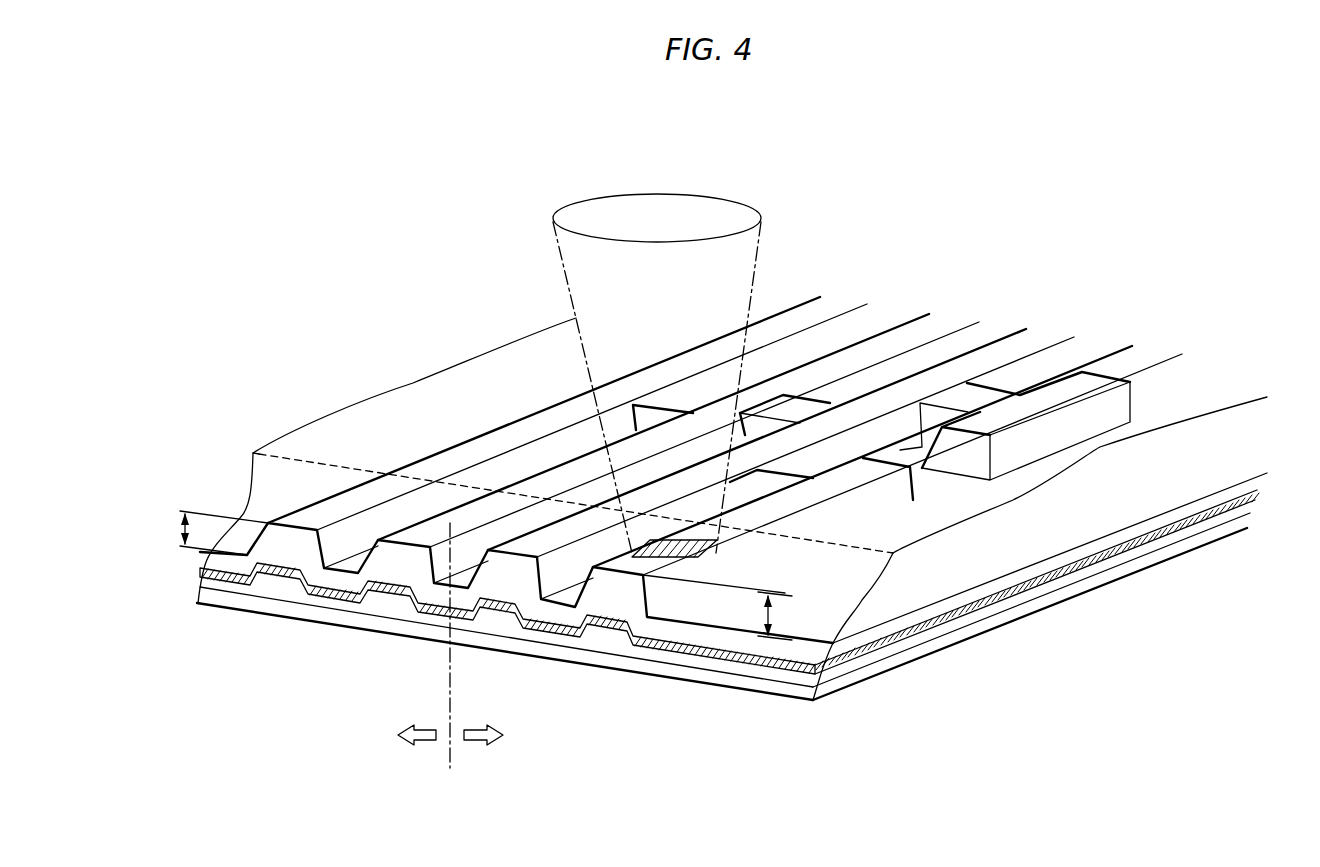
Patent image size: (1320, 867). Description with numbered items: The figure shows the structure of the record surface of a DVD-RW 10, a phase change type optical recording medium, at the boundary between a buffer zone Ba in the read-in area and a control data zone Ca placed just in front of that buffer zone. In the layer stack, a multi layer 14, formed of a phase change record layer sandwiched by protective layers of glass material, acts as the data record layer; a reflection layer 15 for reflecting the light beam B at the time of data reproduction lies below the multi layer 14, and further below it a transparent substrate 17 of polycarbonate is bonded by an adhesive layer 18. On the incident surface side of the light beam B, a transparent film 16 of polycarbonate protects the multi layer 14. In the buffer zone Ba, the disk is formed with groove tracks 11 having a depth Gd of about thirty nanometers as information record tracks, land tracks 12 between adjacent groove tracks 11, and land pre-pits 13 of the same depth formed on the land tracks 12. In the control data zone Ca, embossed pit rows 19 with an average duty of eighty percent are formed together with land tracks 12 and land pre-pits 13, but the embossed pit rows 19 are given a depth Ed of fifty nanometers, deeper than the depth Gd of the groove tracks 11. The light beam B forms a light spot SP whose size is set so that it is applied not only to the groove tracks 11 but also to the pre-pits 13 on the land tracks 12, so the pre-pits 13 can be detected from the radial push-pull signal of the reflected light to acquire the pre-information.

The DVD-RW 10 is at (1064, 186).
The groove tracks 11 is at (810, 380).
The land tracks 12 is at (460, 577).
The land pre-pits 13 is at (620, 414).
The multi layer 14 is at (438, 597).
The reflection layer 15 is at (312, 597).
The transparent film 16 is at (1143, 507).
The transparent substrate 17 is at (222, 602).
The adhesive layer 18 is at (597, 640).
The embossed pit rows 19 is at (1057, 400).
The light beam B is at (760, 247).
The light spot SP is at (688, 562).
The depth of the groove tracks Gd is at (209, 533).
The depth of the embossed pit rows Ed is at (778, 616).
The buffer zone Ba is at (401, 735).
The control data zone Ca is at (498, 735).